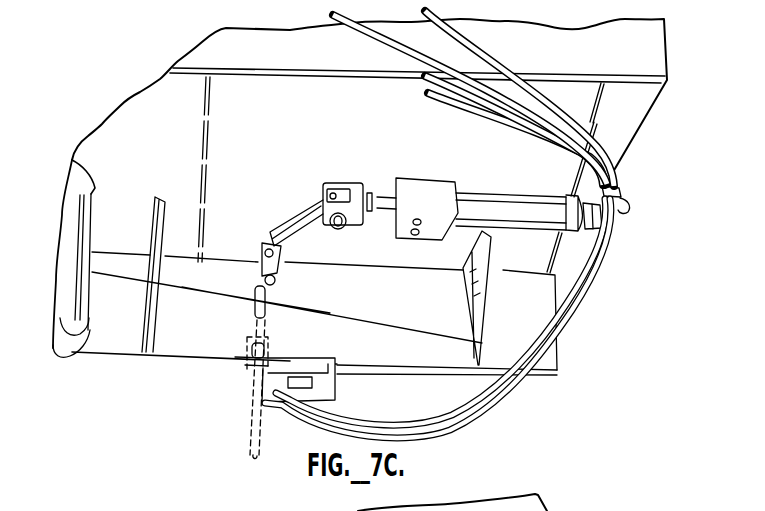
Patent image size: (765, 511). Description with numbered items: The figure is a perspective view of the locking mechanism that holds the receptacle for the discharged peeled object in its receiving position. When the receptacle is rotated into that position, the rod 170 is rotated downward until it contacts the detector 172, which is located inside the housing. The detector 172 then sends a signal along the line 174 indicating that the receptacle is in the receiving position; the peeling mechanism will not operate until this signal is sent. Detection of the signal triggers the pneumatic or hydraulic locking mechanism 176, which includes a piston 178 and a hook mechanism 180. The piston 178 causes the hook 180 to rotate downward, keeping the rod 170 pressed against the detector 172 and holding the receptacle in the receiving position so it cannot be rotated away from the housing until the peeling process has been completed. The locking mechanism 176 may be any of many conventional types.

The rod 170 is at (263, 320).
The detector 172 is at (275, 388).
The line 174 is at (400, 437).
The locking mechanism 176 is at (404, 164).
The piston 178 is at (485, 194).
The hook mechanism 180 is at (260, 250).